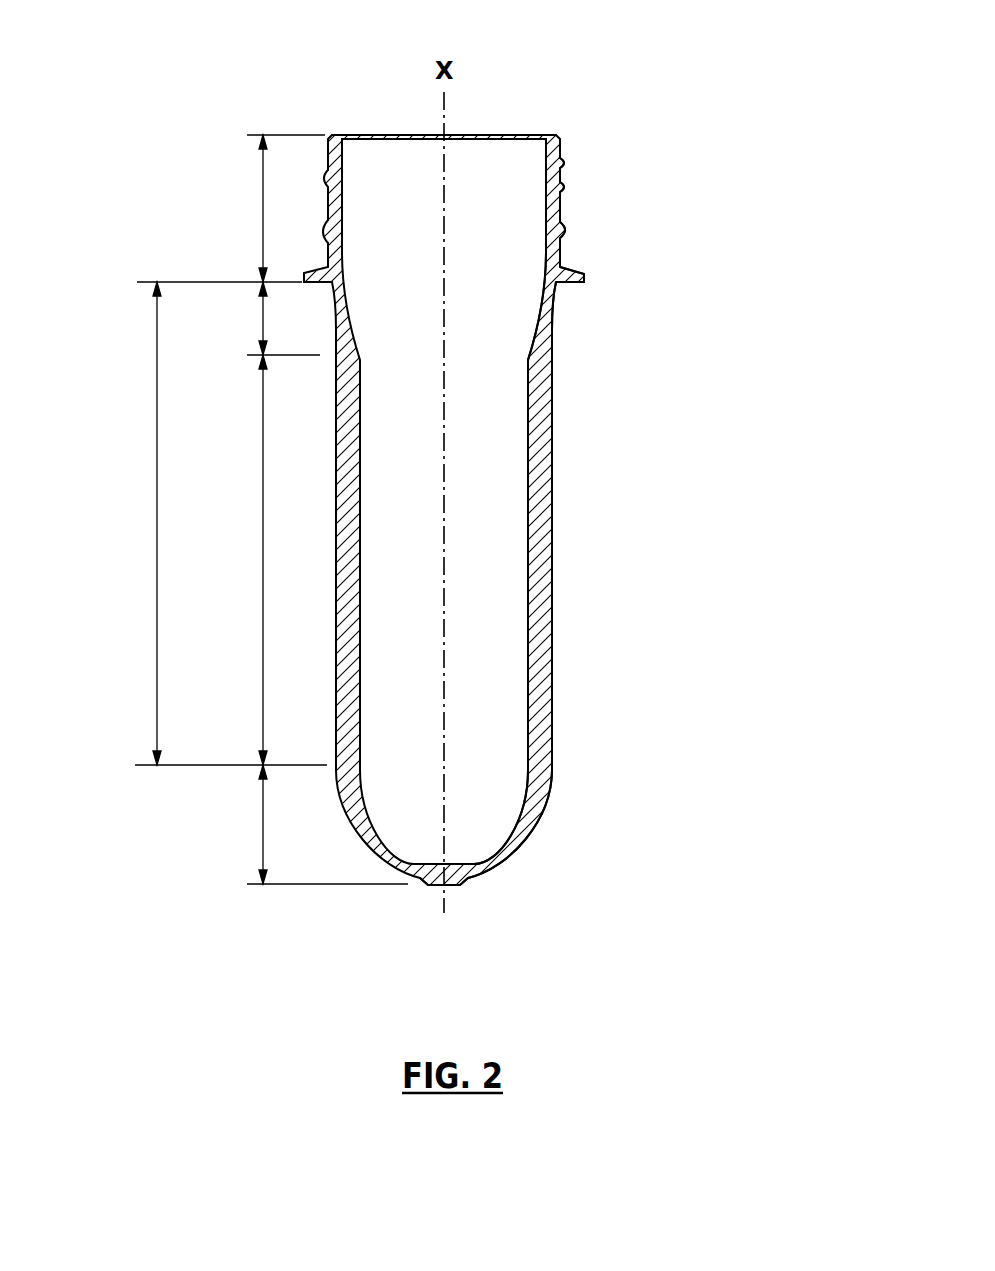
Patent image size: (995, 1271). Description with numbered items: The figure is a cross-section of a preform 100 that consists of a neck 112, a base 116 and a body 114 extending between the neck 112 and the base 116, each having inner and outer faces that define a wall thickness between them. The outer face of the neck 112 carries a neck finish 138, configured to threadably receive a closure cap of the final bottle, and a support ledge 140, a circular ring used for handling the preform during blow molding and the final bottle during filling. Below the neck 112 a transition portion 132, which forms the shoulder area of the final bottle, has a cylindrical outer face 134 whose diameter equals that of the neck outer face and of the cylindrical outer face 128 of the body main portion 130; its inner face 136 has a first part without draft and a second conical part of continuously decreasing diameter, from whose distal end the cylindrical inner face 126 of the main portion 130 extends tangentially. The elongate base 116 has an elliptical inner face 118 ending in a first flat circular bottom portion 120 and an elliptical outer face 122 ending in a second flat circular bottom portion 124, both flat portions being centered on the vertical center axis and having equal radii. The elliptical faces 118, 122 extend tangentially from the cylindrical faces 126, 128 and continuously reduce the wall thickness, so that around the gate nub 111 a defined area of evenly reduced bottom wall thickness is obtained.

The preform 100 is at (715, 137).
The gate nub 111 is at (435, 886).
The neck 112 is at (263, 203).
The body 114 is at (157, 510).
The base 116 is at (263, 840).
The elliptical inner face 118 is at (520, 812).
The first flat circular bottom portion 120 is at (484, 880).
The elliptical outer face 122 is at (520, 847).
The second flat circular bottom portion 124 is at (468, 882).
The cylindrical inner face of the body 126 is at (528, 512).
The cylindrical outer face of the body 128 is at (551, 580).
The main portion of the body 130 is at (263, 550).
The transition portion 132 is at (263, 320).
The cylindrical outer face of the transition portion 134 is at (553, 300).
The inner face of the transition portion 136 is at (540, 340).
The neck finish 138 is at (575, 191).
The support ledge 140 is at (584, 276).